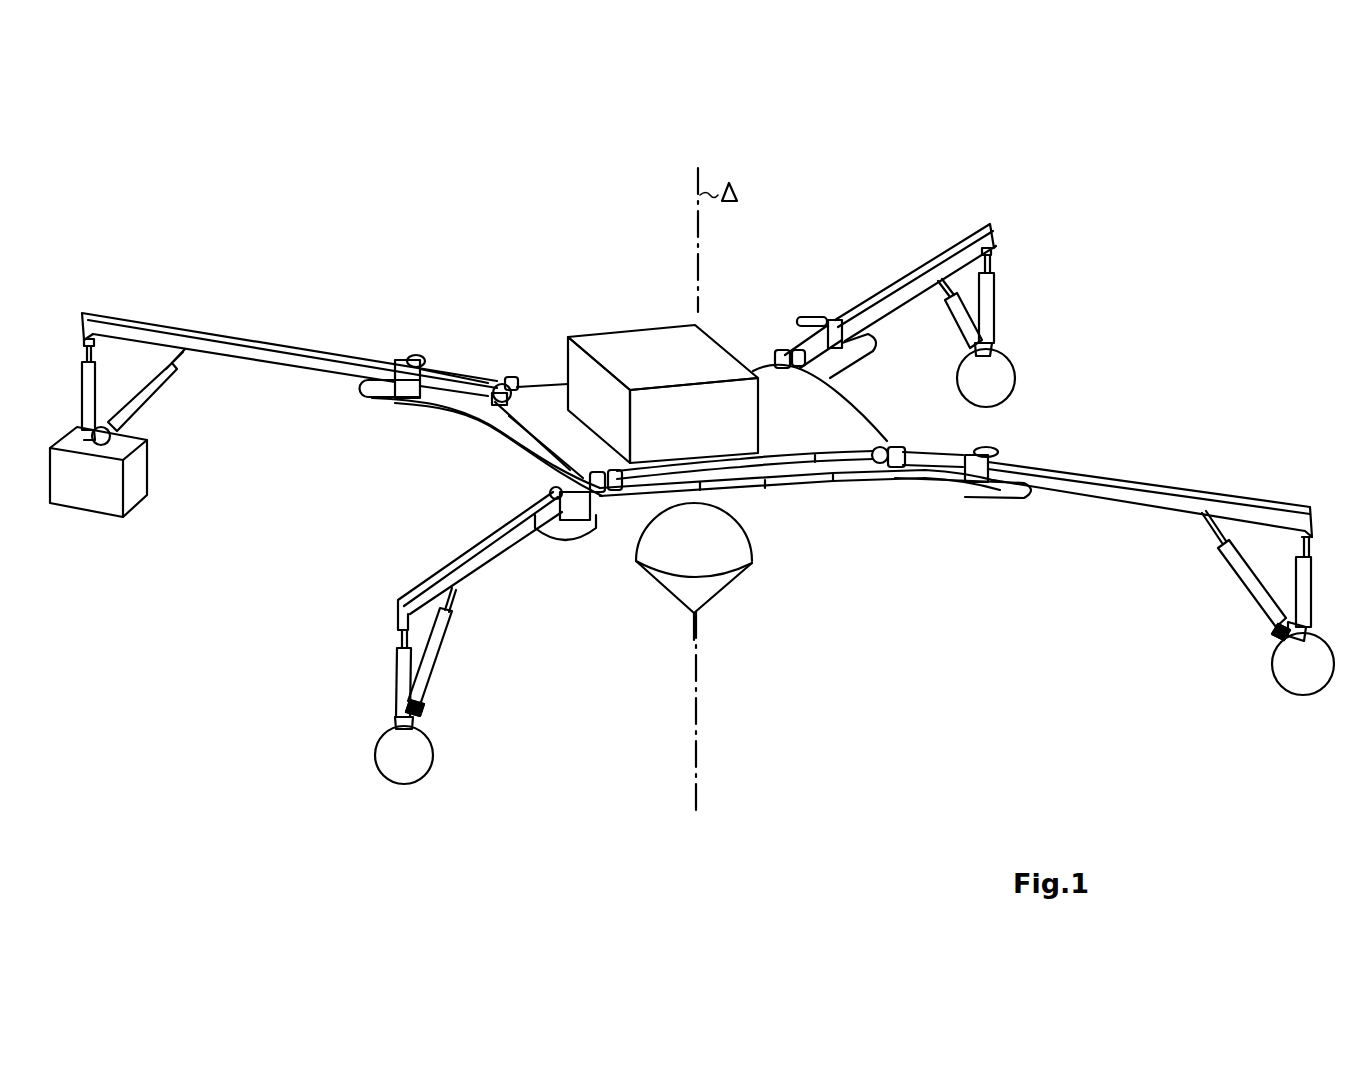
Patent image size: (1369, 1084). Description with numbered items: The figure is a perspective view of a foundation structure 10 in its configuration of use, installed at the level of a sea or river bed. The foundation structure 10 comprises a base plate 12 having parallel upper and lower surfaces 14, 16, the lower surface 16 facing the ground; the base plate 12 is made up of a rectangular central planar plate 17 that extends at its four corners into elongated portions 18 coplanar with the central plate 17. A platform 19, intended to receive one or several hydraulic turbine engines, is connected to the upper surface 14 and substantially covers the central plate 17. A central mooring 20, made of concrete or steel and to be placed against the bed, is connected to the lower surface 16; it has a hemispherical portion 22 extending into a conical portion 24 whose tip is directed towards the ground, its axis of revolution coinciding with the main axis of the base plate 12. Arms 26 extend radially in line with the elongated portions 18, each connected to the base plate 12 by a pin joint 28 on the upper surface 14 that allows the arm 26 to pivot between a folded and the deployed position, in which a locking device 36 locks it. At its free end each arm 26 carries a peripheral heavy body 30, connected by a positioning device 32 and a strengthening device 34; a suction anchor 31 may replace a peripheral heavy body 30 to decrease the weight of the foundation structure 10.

The foundation structure 10 is at (778, 141).
The base plate 12 is at (842, 481).
The upper surface 14 is at (815, 473).
The lower surface 16 is at (795, 488).
The central planar plate 17 is at (766, 489).
The elongated portions 18 is at (360, 400).
The platform 19 is at (797, 437).
The central mooring 20 is at (752, 553).
The hemispherical portion 22 is at (722, 575).
The conical portion 24 is at (703, 614).
The arms 26 is at (253, 353).
The pin joint 28 is at (517, 384).
The peripheral heavy body 30 is at (1007, 377).
The suction anchor 31 is at (88, 500).
The positioning device 32 is at (82, 394).
The strengthening device 34 is at (138, 411).
The locking device 36 is at (402, 397).